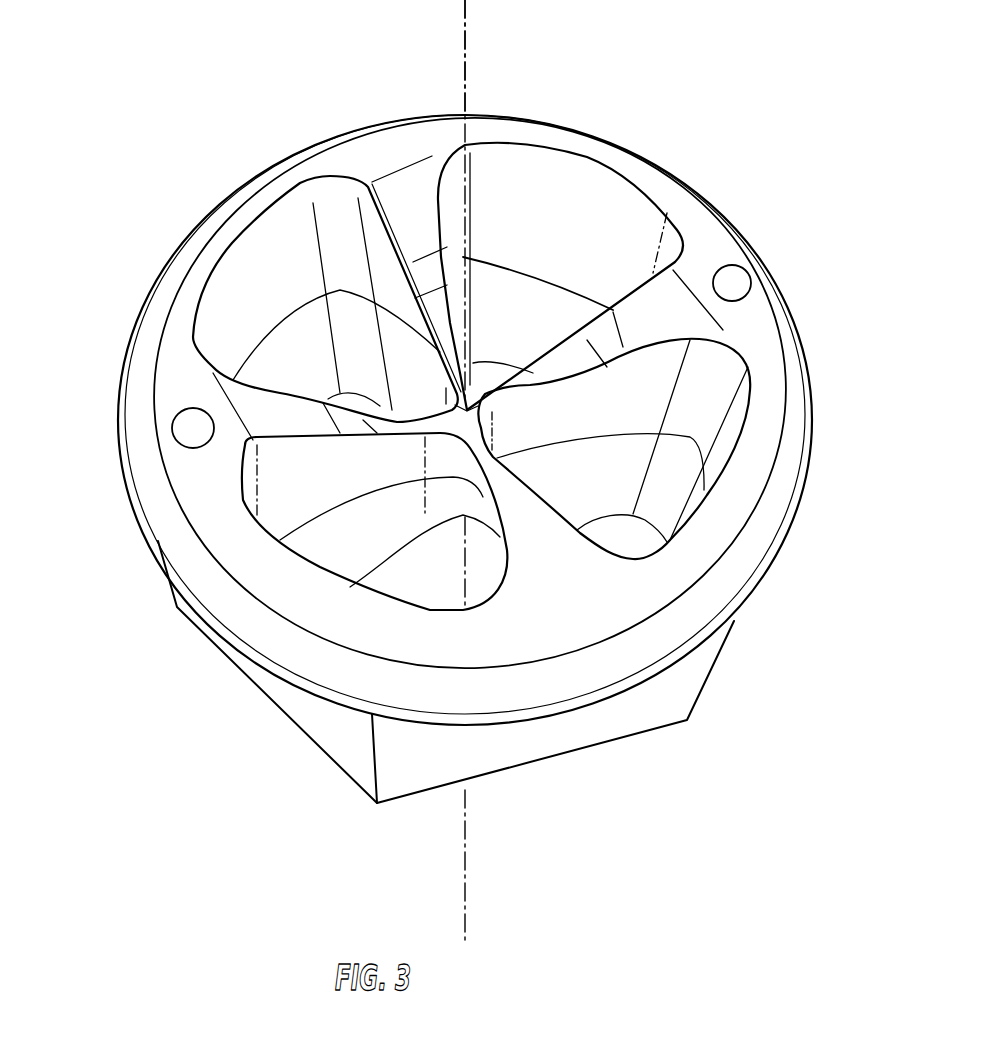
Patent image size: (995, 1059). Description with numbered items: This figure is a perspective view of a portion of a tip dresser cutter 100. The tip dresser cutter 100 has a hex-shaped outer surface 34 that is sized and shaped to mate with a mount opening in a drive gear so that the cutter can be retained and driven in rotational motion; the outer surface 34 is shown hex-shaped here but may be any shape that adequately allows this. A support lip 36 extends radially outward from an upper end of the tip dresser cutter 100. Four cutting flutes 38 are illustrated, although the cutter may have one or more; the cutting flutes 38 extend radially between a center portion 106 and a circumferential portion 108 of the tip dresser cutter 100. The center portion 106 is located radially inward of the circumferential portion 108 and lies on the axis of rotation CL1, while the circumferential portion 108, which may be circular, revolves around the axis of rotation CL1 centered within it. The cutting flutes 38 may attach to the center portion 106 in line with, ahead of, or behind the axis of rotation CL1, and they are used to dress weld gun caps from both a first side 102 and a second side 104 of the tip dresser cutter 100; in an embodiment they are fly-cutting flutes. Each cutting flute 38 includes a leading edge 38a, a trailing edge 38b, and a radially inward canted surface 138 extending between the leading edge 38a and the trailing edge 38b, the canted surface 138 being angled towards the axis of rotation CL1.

The hex-shaped outer surface 34 is at (340, 743).
The support lip 36 is at (170, 515).
The cutting flutes 38 is at (463, 257).
The leading edge 38a is at (407, 307).
The trailing edge 38b is at (445, 262).
The tip dresser cutter 100 is at (110, 200).
The first side 102 is at (515, 67).
The second side 104 is at (490, 838).
The center portion 106 is at (467, 408).
The circumferential portion 108 is at (767, 350).
The radially inward canted surface 138 is at (386, 203).
The axis of rotation CL1 is at (465, 196).